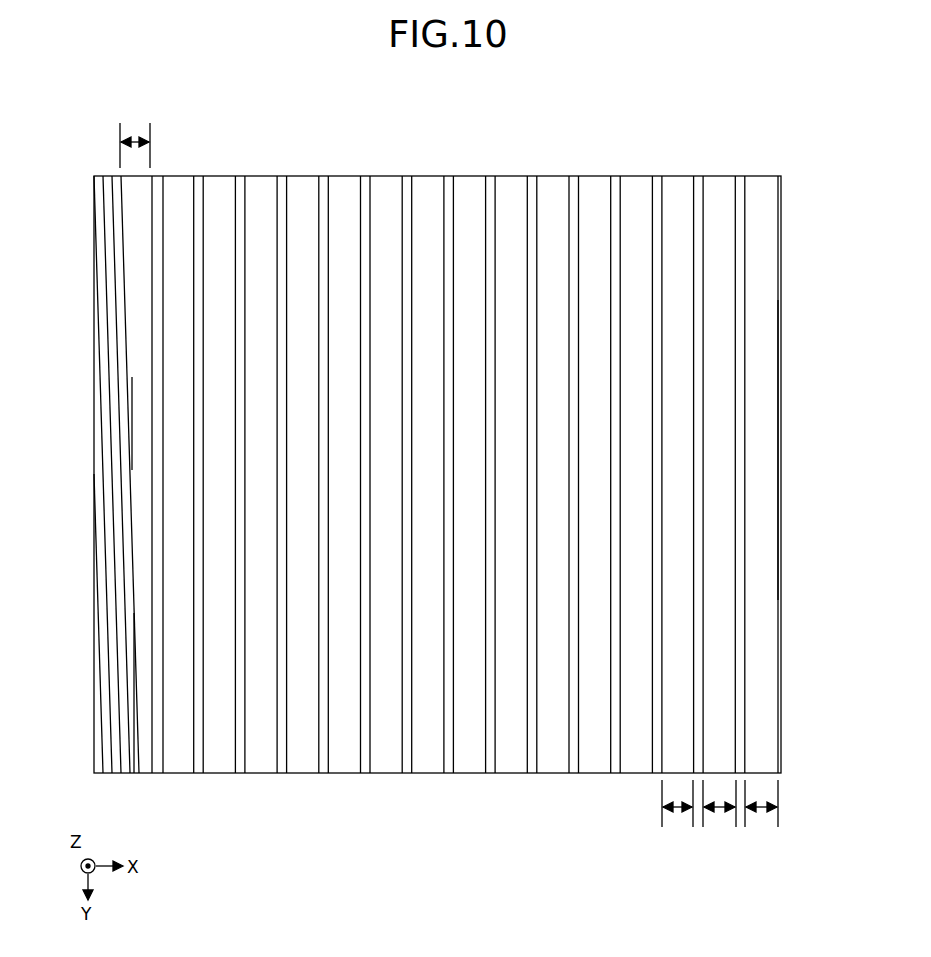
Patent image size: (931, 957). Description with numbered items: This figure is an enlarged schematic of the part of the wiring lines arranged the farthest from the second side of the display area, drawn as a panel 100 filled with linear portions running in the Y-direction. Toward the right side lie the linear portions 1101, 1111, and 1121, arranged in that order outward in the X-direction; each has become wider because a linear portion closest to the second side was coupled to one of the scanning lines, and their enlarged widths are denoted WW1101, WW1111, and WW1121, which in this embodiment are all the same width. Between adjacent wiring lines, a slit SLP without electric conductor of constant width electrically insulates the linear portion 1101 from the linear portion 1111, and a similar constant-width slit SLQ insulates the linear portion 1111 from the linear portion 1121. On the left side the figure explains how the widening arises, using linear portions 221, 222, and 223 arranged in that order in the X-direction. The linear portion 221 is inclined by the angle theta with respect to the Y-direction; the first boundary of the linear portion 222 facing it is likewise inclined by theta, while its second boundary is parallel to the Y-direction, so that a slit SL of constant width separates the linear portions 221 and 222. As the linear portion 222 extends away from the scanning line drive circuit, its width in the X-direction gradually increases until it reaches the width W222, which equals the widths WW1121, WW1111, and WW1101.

The touch panel / substrate 100 is at (792, 204).
The linear portion 221 is at (127, 763).
The linear portion 222 is at (147, 757).
The linear portion 223 is at (181, 766).
The width of linear portion 222 W222 is at (132, 141).
The slit SL is at (134, 734).
The linear portion 1101 is at (678, 552).
The linear portion 1111 is at (722, 618).
The linear portion 1121 is at (770, 687).
The slit SLP is at (698, 732).
The slit SLQ is at (742, 730).
The width of linear portion 1101 WW1101 is at (675, 812).
The width of linear portion 1111 WW1111 is at (719, 812).
The width of linear portion 1121 WW1121 is at (762, 812).